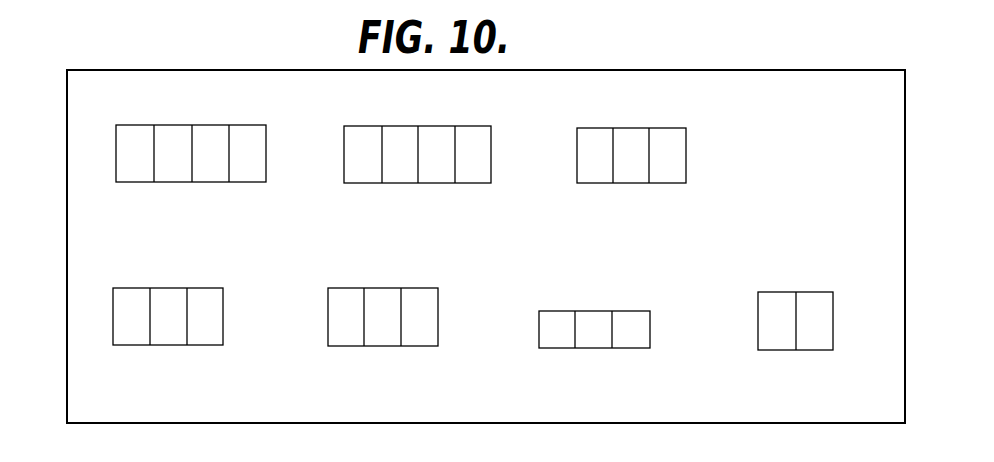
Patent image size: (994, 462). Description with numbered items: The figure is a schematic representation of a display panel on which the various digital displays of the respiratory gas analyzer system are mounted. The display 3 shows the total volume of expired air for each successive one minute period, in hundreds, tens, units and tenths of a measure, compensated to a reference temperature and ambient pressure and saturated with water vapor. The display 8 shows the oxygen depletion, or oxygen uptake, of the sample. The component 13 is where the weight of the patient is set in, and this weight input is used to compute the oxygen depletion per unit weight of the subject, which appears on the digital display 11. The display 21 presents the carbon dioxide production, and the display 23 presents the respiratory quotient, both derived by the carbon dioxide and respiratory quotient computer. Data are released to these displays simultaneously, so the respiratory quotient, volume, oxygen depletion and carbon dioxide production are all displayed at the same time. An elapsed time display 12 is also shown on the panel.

The elapsed time display 12 is at (129, 151).
The display 3 is at (350, 140).
The display 8 is at (578, 135).
The digital display 23 is at (122, 330).
The display 21 is at (437, 330).
The component 13 is at (540, 342).
The digital display 11 is at (825, 307).